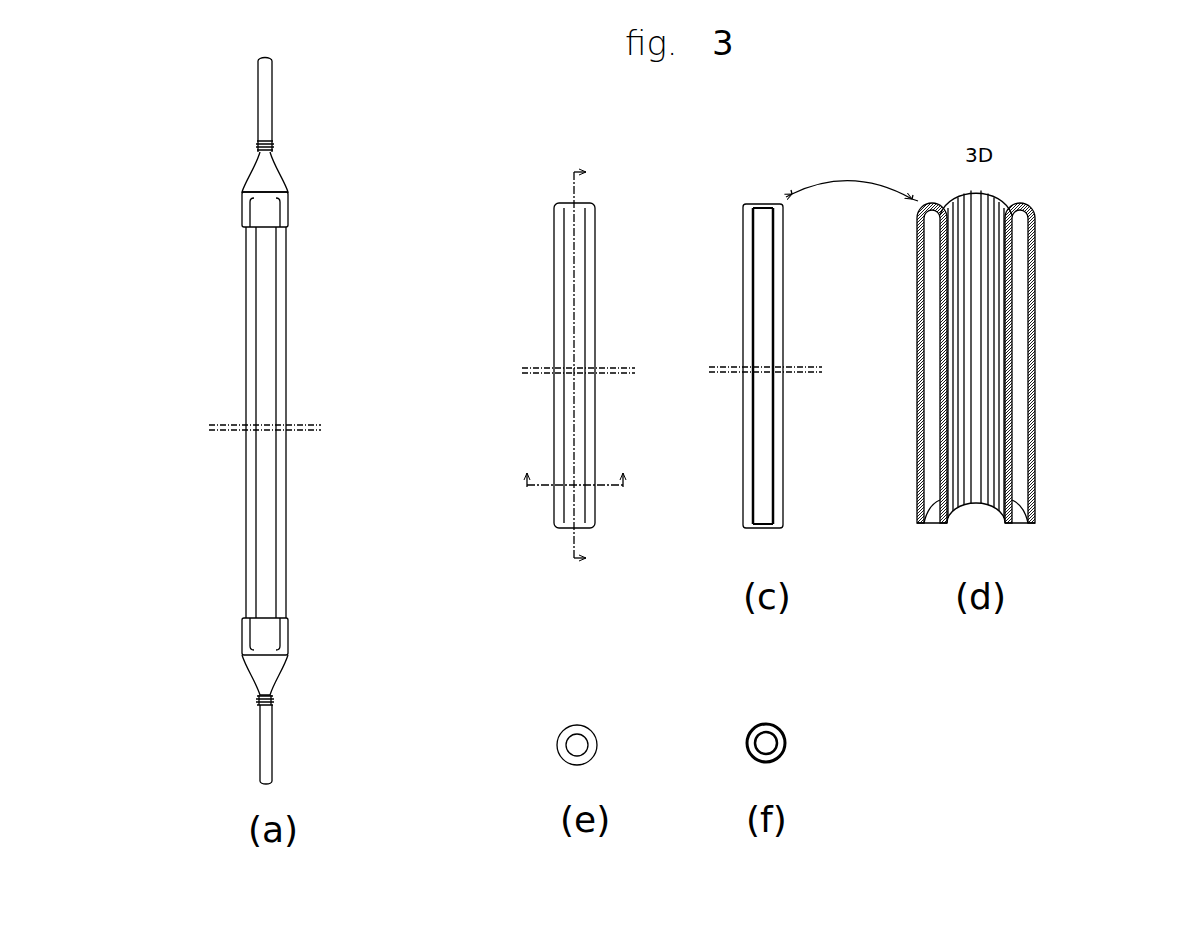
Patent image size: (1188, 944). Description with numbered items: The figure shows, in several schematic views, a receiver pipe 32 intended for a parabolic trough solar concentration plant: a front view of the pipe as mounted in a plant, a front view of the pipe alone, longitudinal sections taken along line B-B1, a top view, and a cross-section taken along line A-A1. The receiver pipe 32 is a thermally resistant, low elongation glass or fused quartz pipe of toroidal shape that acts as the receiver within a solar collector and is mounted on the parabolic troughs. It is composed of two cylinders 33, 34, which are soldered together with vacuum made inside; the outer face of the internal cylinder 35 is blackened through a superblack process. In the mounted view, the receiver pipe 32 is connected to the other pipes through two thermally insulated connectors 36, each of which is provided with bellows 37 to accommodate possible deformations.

The receiver pipe 32 is at (265, 335).
The cylinder 33 is at (783, 256).
The cylinder 34 is at (770, 300).
The internal cylinder 35 is at (775, 465).
The thermally insulated connector 36 is at (278, 178).
The bellows 37 is at (271, 147).